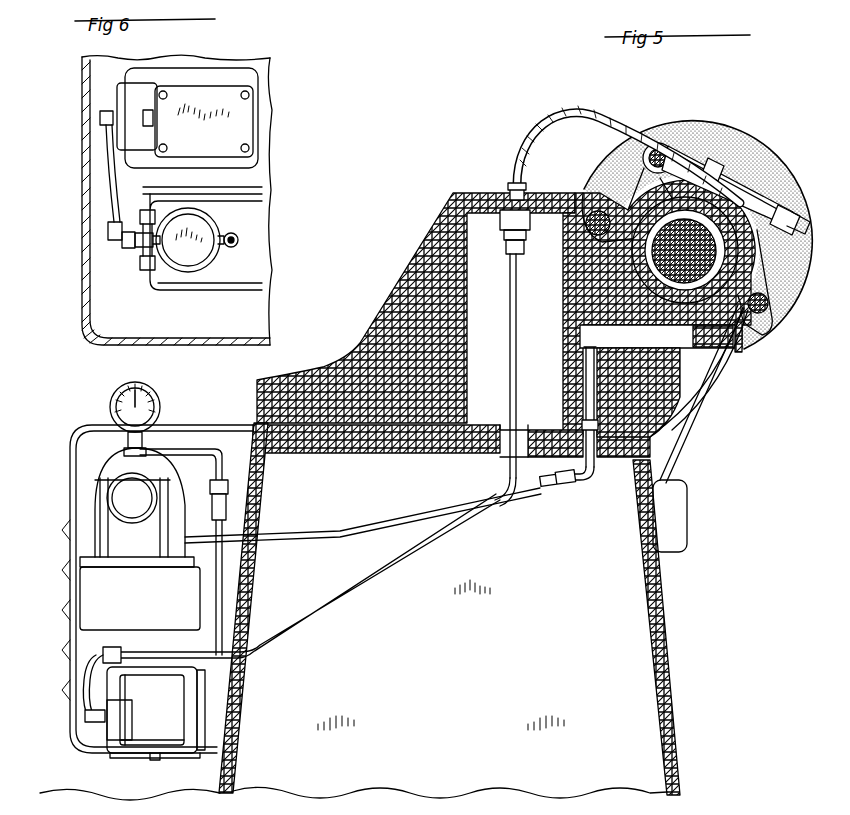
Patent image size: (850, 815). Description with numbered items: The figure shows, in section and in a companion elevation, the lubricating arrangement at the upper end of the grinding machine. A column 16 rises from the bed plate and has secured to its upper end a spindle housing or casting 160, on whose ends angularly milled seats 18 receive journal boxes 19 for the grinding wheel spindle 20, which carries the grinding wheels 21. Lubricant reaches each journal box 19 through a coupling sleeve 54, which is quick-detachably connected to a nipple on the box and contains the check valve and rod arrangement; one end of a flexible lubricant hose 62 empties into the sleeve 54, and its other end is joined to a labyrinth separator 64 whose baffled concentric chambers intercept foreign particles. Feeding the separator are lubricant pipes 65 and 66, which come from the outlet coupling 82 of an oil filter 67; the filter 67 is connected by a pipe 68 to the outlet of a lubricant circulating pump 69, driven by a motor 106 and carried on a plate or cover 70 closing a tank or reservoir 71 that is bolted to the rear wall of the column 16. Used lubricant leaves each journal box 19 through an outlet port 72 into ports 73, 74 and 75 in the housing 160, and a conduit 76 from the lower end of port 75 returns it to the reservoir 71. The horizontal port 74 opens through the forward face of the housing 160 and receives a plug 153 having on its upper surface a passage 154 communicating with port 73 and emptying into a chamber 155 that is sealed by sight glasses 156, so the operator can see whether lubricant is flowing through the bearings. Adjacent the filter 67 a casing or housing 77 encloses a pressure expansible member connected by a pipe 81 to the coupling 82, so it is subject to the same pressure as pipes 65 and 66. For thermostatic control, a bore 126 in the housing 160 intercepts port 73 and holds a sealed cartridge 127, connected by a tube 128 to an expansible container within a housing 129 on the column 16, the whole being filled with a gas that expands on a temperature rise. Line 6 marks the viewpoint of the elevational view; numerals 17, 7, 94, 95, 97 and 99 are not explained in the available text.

In FIG. 5, the column 16 is at (655, 583).
In FIG. 5, the bracket 17 is at (755, 262).
In FIG. 5, the angularly milled seat 18 is at (630, 288).
In FIG. 5, the journal box 19 is at (726, 168).
In FIG. 5, the grinding wheel spindle 20 is at (790, 200).
In FIG. 5, the grinding wheel 21 is at (712, 138).
In FIG. 5, the coupling sleeve 54 is at (730, 165).
In FIG. 5, the flexible lubricant hose 62 is at (582, 118).
In FIG. 5, the labyrinth separator 64 is at (503, 243).
In FIG. 6, the lubricant pipe 65 is at (218, 290).
In FIG. 5, the lubricant pipe 65 is at (383, 565).
In FIG. 6, the lubricant pipe 66 is at (262, 196).
In FIG. 6, the oil filter 67 is at (203, 270).
In FIG. 5, the oil filter 67 is at (150, 762).
In FIG. 5, the pipe 68 is at (228, 580).
In FIG. 5, the lubricant circulating pump 69 is at (112, 494).
In FIG. 5, the plate or cover 70 is at (80, 560).
In FIG. 5, the tank or reservoir 71 is at (76, 600).
In FIG. 5, the outlet port 72 is at (660, 312).
In FIG. 5, the port 73 is at (690, 322).
In FIG. 5, the horizontal port 74 is at (700, 395).
In FIG. 5, the port 75 is at (582, 373).
In FIG. 5, the conduit or pipe 76 is at (530, 494).
In FIG. 6, the casing or housing 77 is at (222, 88).
In FIG. 5, the casing or housing 77 is at (118, 700).
In FIG. 6, the pipe 81 is at (100, 150).
In FIG. 5, the pipe 81 is at (86, 690).
In FIG. 6, the outlet coupling 82 is at (135, 247).
In FIG. 5, the outlet coupling 82 is at (115, 647).
In FIG. 5, the wire 94 is at (293, 806).
In FIG. 5, the wire 95 is at (263, 806).
In FIG. 5, the wire 97 is at (226, 806).
In FIG. 5, the wire 99 is at (153, 806).
In FIG. 5, the motor 106 is at (100, 448).
In FIG. 5, the bore 126 is at (761, 290).
In FIG. 5, the sealed cartridge 127 is at (695, 418).
In FIG. 5, the tube 128 is at (705, 448).
In FIG. 5, the housing 129 is at (688, 495).
In FIG. 5, the plug 153 is at (728, 400).
In FIG. 5, the passage 154 is at (722, 410).
In FIG. 5, the chamber 155 is at (750, 350).
In FIG. 5, the sight glass 156 is at (745, 345).
In FIG. 5, the spindle housing or casting 160 is at (432, 278).
In FIG. 5, the line 6— 6 is at (327, 640).
In FIG. 6, the section line 7- 7 is at (325, 118).